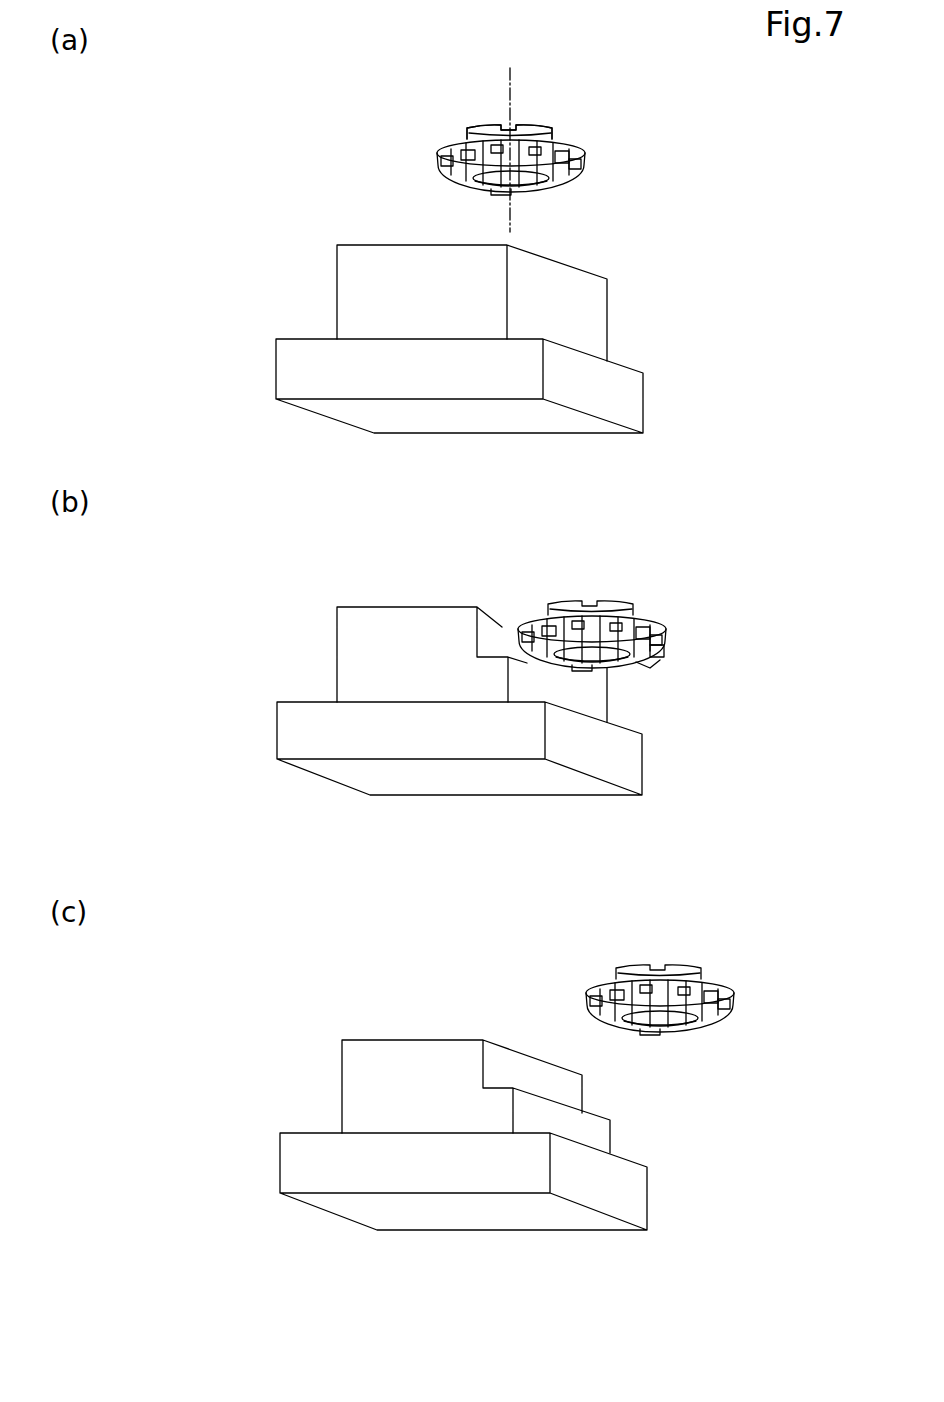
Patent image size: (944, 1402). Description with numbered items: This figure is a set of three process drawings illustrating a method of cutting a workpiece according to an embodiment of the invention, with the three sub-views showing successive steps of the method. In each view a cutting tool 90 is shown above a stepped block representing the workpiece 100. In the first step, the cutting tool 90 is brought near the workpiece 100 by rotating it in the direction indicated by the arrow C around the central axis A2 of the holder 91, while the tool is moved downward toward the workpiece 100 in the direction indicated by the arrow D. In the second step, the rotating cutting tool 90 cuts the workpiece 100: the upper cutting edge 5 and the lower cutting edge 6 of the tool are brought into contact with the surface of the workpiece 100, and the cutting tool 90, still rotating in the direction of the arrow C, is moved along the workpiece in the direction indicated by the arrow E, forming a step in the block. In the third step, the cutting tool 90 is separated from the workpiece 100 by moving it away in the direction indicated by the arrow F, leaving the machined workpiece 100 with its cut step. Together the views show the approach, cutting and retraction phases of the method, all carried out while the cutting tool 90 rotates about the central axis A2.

The cutting tool 90 is at (567, 132).
The holder 91 is at (490, 127).
The central axis A2 is at (513, 77).
The workpiece 100 is at (323, 318).
The upper cutting edge 5 is at (667, 655).
The lower cutting edge 6 is at (650, 668).
The arrow C is at (433, 148).
The arrow D is at (432, 173).
The arrow E is at (668, 588).
The arrow F is at (623, 1035).